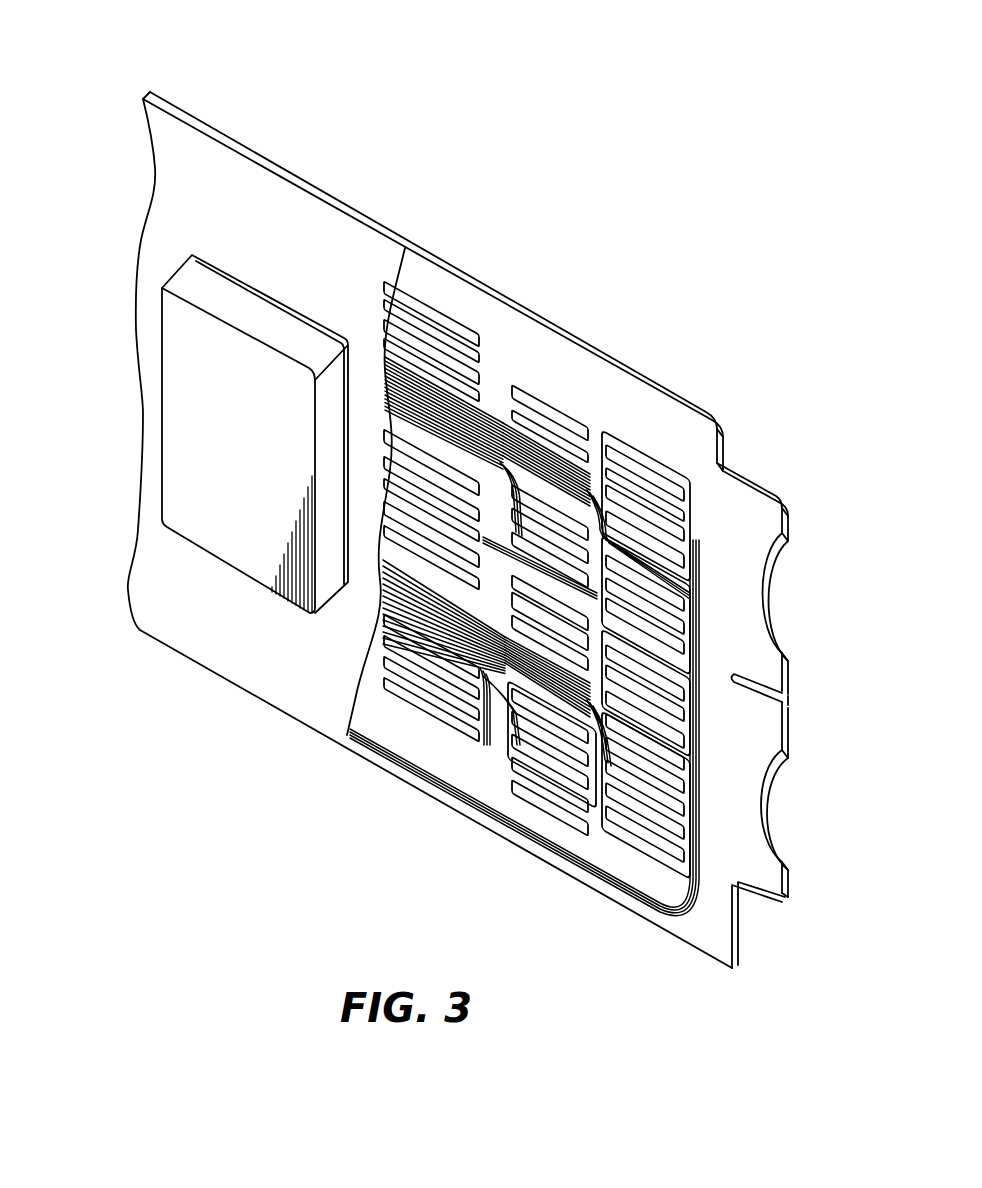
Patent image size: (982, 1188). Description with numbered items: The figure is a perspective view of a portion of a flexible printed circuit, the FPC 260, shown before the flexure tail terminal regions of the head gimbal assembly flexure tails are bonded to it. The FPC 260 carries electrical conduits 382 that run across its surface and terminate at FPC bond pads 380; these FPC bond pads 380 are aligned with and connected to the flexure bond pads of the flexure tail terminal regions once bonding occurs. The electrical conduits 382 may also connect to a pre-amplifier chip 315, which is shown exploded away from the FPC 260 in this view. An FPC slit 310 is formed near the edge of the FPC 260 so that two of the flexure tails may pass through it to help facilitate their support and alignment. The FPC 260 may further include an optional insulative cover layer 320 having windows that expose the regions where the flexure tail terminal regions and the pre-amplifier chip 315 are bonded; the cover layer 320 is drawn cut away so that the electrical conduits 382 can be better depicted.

The flexible printed circuit 260 is at (463, 80).
The FPC slit 310 is at (784, 698).
The pre-amplifier chip 315 is at (196, 413).
The insulative cover layer 320 is at (235, 660).
The FPC bond pads 380 is at (557, 395).
The electrical conduits 382 is at (496, 412).